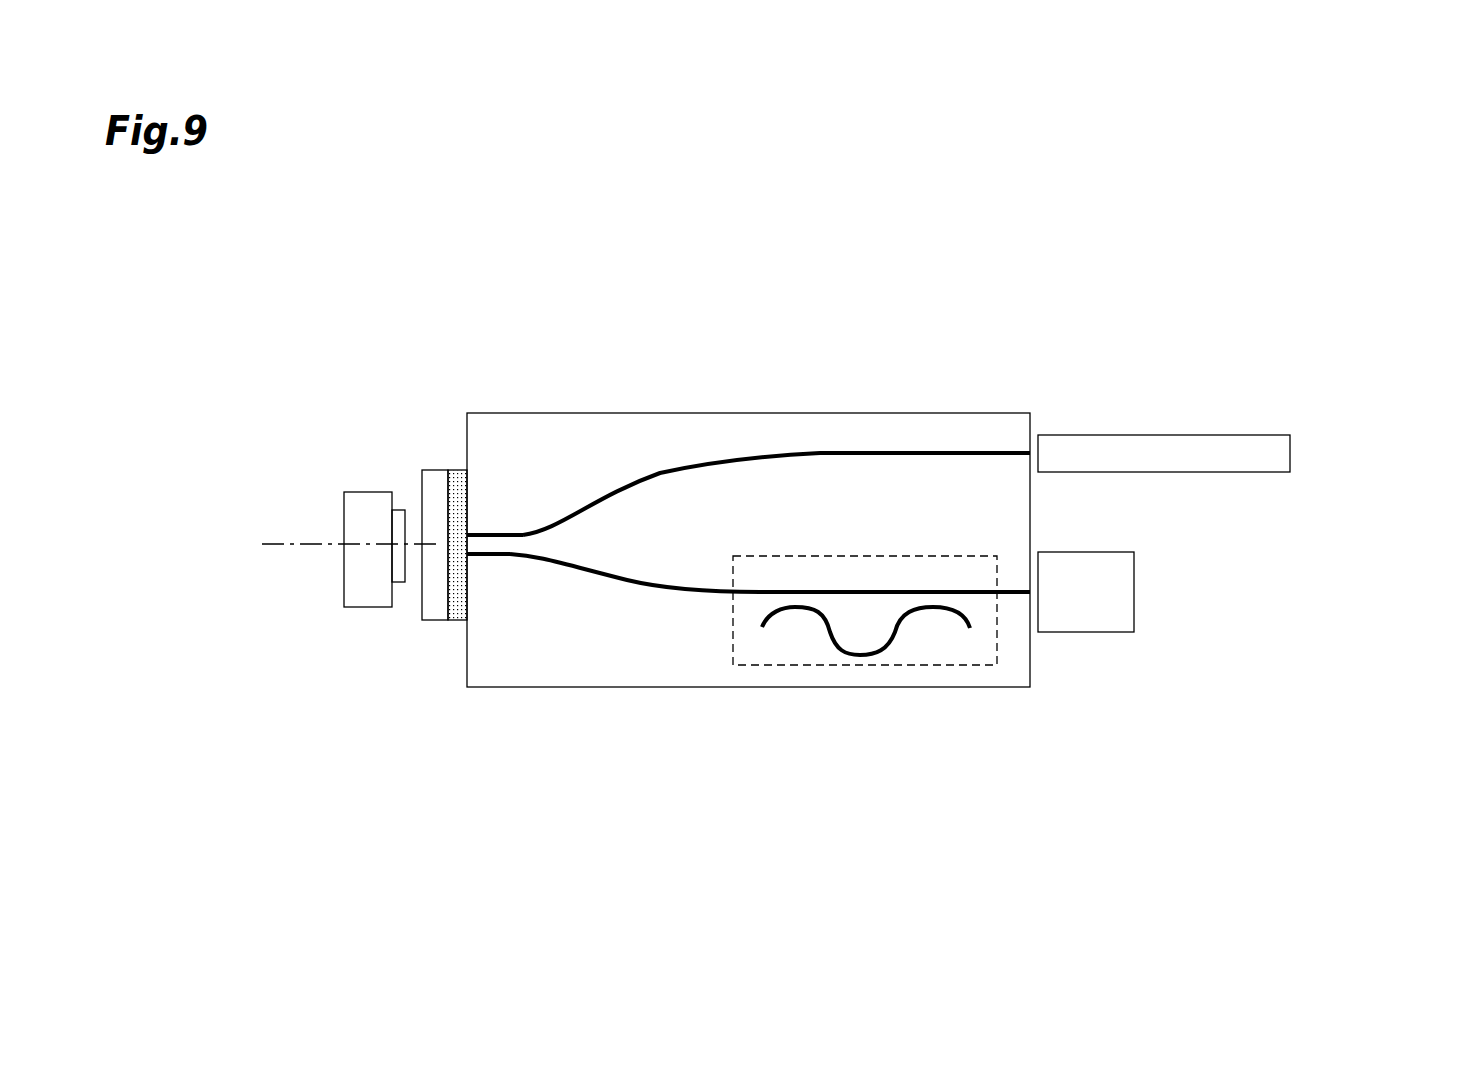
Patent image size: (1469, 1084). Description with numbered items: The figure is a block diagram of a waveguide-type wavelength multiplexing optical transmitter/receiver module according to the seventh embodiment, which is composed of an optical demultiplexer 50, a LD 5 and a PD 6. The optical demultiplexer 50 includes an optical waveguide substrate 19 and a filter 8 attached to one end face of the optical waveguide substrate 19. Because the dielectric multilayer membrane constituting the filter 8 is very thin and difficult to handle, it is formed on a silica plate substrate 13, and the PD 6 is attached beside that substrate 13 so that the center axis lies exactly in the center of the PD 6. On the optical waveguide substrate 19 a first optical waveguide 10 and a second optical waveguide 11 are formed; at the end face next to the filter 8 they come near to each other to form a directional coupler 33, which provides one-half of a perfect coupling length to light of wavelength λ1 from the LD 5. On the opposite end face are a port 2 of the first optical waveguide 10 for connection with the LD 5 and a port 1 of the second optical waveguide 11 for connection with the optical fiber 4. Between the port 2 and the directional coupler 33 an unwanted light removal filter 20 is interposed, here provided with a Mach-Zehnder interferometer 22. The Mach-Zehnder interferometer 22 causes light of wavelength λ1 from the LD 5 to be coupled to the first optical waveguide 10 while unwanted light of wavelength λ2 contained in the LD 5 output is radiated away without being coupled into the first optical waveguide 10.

The port 1 is at (987, 453).
The port 2 is at (1010, 597).
The optical fiber 4 is at (1213, 435).
The laser diode (LD) 5 is at (1134, 600).
The photodiode (PD) 6 is at (368, 592).
The filter 8 is at (450, 470).
The first optical waveguide 10 is at (698, 590).
The second optical waveguide 11 is at (853, 453).
The substrate 13 is at (435, 468).
The optical waveguide substrate 19 is at (612, 687).
The unwanted light removal filter 20 is at (967, 556).
The Mach-Zehnder interferometer 22 is at (878, 617).
The directional coupler 33 is at (485, 535).
The optical demultiplexer 50 is at (748, 670).